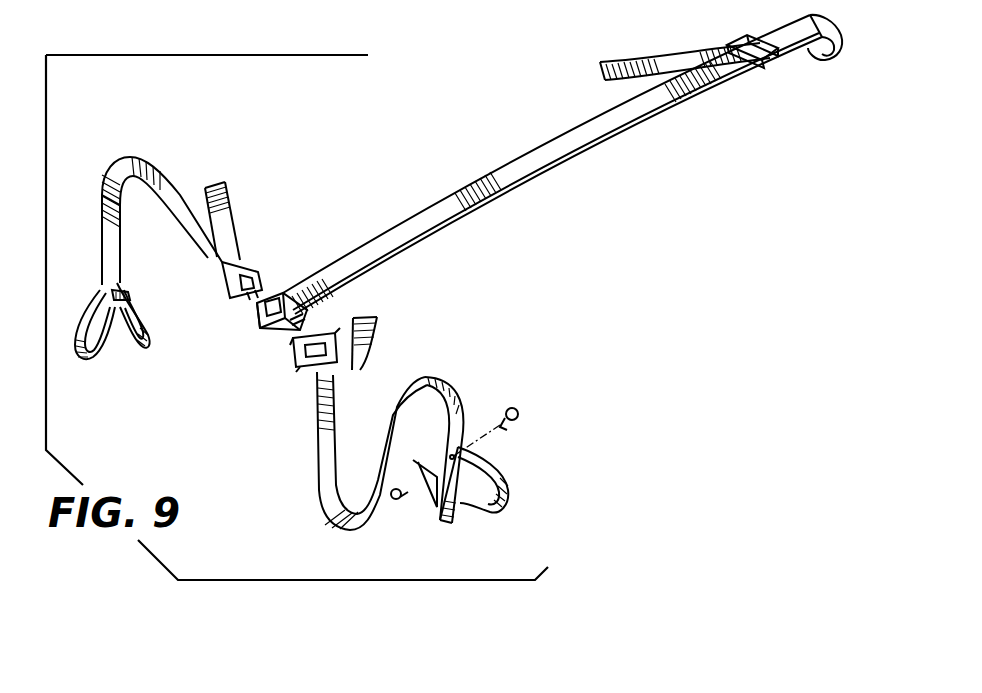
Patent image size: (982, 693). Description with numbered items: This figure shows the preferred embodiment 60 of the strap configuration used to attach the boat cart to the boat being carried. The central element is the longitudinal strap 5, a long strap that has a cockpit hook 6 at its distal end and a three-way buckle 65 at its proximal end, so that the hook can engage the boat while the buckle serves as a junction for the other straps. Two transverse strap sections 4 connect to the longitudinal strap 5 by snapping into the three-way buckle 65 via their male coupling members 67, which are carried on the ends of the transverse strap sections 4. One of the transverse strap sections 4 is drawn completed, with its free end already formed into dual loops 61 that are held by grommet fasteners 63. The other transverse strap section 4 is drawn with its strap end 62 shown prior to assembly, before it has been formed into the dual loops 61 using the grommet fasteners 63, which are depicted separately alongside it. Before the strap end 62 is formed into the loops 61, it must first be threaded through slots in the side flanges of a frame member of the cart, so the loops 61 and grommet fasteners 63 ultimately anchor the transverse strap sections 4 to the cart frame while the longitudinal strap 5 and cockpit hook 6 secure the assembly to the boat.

The transverse strap sections 4 is at (138, 160).
The longitudinal strap 5 is at (557, 147).
The cockpit hook 6 is at (807, 67).
The preferred embodiment of the strap configuration 60 is at (633, 267).
The dual loops 61 is at (92, 360).
The strap end 62 is at (482, 527).
The grommet fasteners 63 is at (140, 303).
The three-way buckle 65 is at (280, 293).
The male coupling members 67 is at (233, 293).